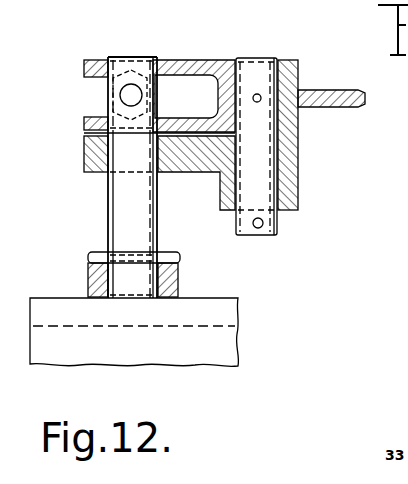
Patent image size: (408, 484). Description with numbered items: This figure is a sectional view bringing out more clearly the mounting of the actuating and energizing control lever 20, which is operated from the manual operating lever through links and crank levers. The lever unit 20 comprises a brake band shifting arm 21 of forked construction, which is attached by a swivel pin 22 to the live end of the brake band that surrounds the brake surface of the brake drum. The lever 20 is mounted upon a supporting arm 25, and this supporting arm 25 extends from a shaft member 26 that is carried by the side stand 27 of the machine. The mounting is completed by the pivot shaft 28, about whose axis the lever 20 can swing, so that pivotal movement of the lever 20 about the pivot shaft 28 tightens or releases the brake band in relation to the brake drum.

The actuating and energizing control lever 20 is at (318, 90).
The brake band shifting arm 21 is at (177, 58).
The swivel pin 22 is at (108, 102).
The supporting arm 25 is at (193, 173).
The shaft member 26 is at (108, 216).
The side stand 27 is at (222, 347).
The pivot shaft 28 is at (263, 176).